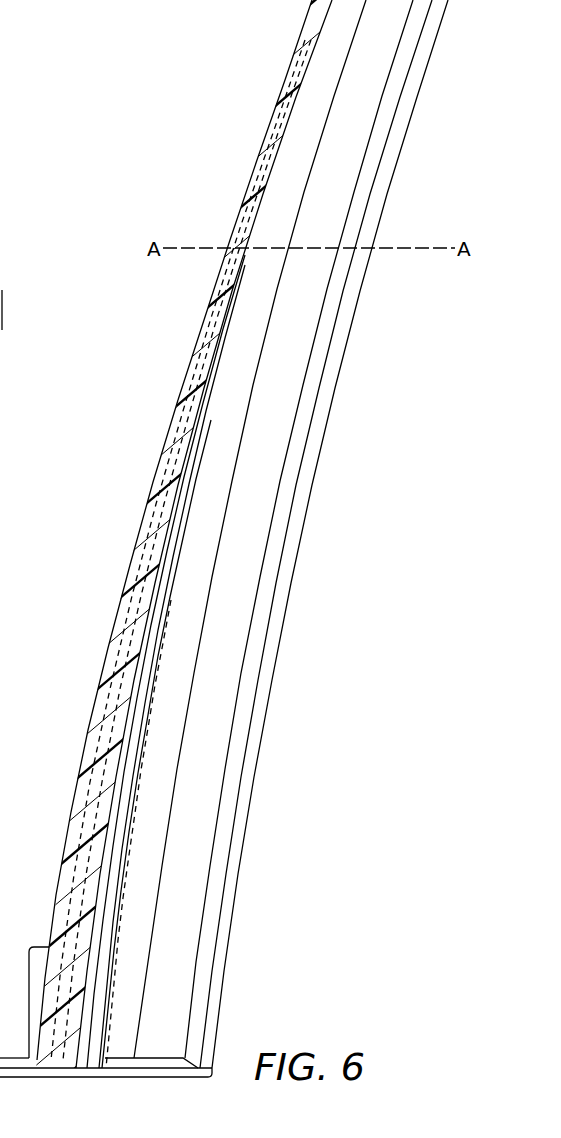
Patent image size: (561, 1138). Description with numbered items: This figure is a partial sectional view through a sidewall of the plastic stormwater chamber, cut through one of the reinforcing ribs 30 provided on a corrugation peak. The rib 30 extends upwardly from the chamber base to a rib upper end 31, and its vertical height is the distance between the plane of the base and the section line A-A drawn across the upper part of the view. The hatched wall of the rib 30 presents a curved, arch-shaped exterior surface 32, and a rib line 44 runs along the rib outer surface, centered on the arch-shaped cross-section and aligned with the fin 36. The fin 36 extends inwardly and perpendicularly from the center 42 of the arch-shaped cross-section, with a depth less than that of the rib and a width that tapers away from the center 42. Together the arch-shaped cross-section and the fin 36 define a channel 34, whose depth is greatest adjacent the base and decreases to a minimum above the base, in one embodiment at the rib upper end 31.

The reinforcing rib 30 is at (192, 402).
The rib upper end 31 is at (227, 262).
The exterior surface 32 is at (82, 768).
The channel 34 is at (97, 912).
The fin 36 is at (125, 720).
The center of the arch-shaped cross-section 42 is at (110, 813).
The rib line 44 is at (105, 663).